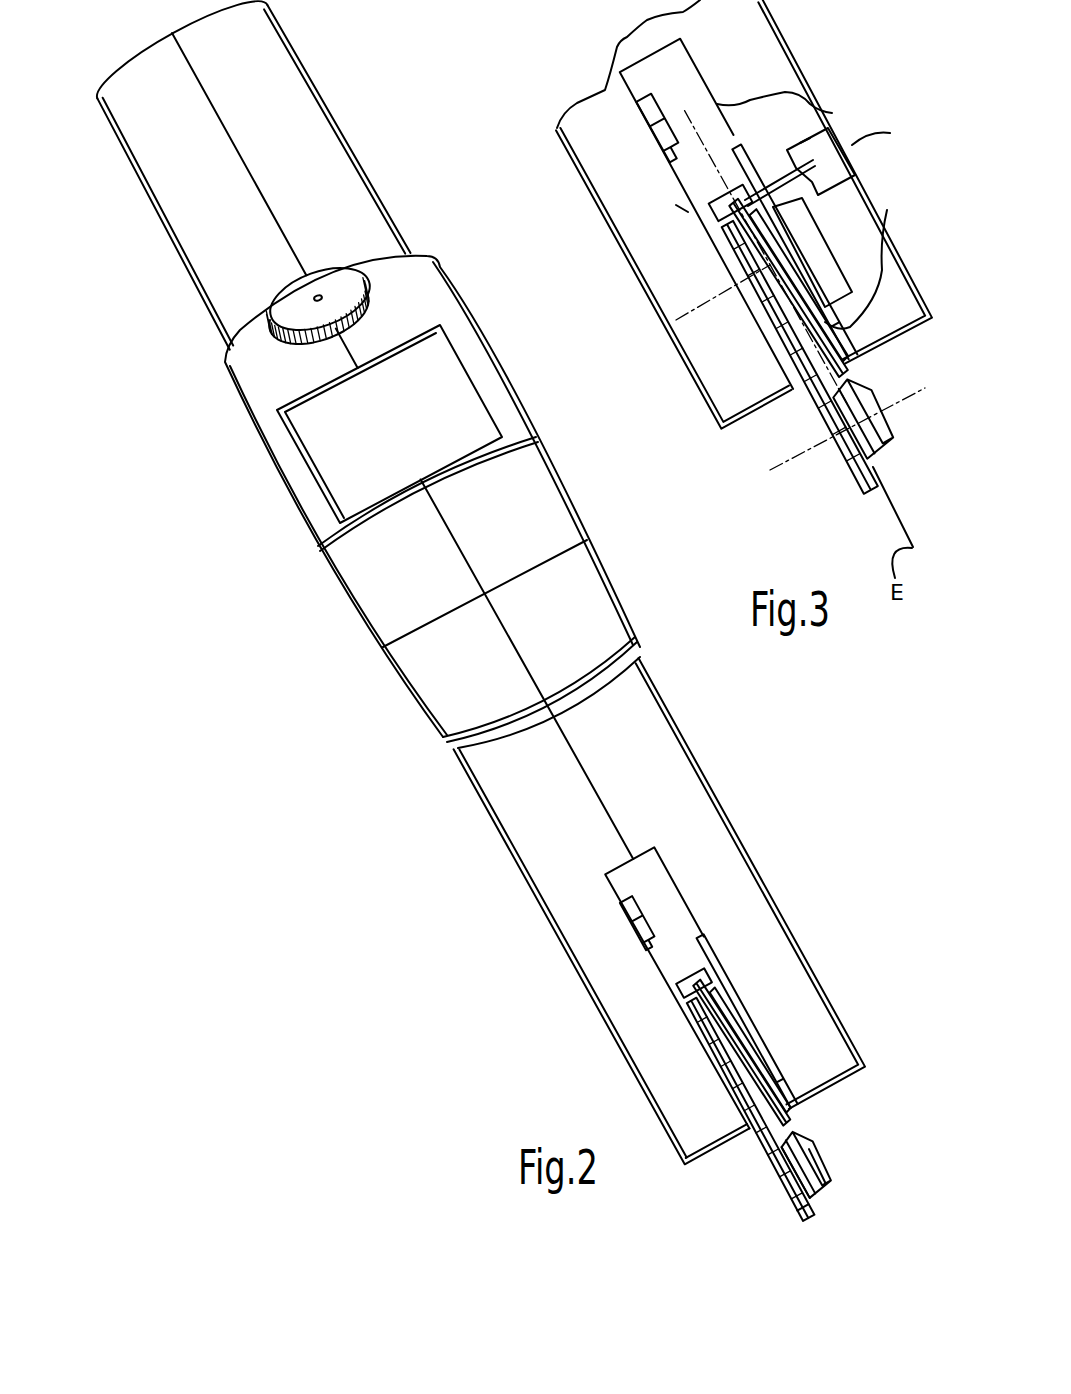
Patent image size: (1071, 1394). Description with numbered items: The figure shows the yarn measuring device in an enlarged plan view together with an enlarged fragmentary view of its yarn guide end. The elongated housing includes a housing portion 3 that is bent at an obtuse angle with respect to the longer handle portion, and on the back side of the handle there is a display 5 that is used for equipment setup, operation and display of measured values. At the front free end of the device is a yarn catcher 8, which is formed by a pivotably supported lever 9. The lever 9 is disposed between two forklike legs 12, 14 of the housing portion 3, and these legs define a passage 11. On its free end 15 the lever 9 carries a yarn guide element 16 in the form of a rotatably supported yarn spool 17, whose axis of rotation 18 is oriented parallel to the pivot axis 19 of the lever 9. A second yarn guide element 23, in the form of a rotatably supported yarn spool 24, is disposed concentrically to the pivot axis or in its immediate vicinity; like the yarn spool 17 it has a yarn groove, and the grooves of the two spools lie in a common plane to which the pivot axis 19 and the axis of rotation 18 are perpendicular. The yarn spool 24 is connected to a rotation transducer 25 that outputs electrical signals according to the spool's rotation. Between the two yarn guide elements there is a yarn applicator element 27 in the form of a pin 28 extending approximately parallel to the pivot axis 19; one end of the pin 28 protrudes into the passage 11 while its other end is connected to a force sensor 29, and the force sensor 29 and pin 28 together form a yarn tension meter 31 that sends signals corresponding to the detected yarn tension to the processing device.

In FIG. 2, the housing portion 3 is at (645, 752).
In FIG. 2, the display 5 is at (410, 431).
In FIG. 2, the yarn catcher 8 is at (834, 1137).
In FIG. 2, the lever 9 is at (760, 1143).
In FIG. 2, the passage 11 is at (686, 960).
In FIG. 3, the passage 11 is at (714, 190).
In FIG. 2, the forklike leg 12 is at (636, 1032).
In FIG. 2, the forklike leg 14 is at (741, 982).
In FIG. 2, the free end 15 is at (795, 1198).
In FIG. 2, the yarn guide element 16 is at (833, 1160).
In FIG. 3, the yarn guide element 16 is at (815, 348).
In FIG. 2, the yarn spool 17 is at (833, 1177).
In FIG. 3, the yarn spool 17 is at (815, 318).
In FIG. 3, the axis of rotation 18 is at (790, 470).
In FIG. 3, the pivot axis 19 is at (713, 305).
In FIG. 2, the yarn guide element 23 is at (734, 1028).
In FIG. 2, the yarn spool 24 is at (745, 1038).
In FIG. 3, the yarn spool 24 is at (872, 463).
In FIG. 3, the rotation transducer 25 is at (820, 267).
In FIG. 3, the yarn applicator element 27 is at (692, 210).
In FIG. 3, the pin 28 is at (718, 213).
In FIG. 3, the force sensor 29 is at (838, 168).
In FIG. 3, the yarn tension meter 31 is at (798, 146).